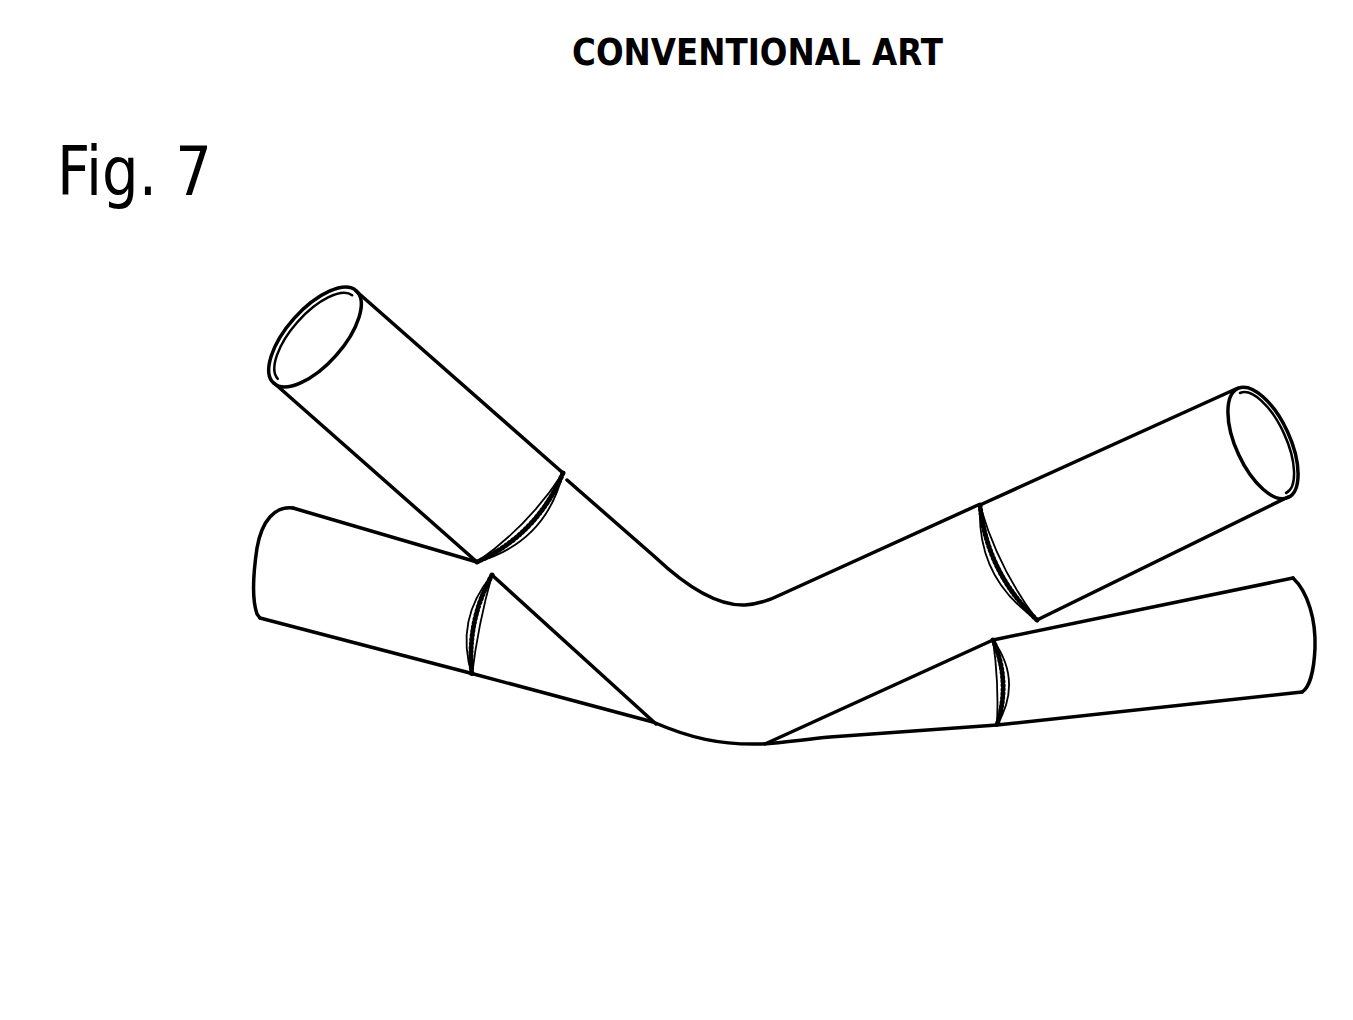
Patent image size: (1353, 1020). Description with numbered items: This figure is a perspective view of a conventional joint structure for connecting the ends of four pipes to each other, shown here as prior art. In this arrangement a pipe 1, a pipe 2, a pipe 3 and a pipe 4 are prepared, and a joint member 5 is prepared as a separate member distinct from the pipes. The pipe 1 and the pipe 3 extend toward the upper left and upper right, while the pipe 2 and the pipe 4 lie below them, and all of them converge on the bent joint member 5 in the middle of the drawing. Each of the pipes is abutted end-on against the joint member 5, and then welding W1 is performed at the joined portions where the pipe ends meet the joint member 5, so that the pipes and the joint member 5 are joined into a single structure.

The pipe 1 is at (460, 388).
The pipe 2 is at (305, 612).
The pipe 3 is at (1152, 437).
The pipe 4 is at (1172, 676).
The joint member 5 is at (738, 707).
The welding W1 is at (563, 473).